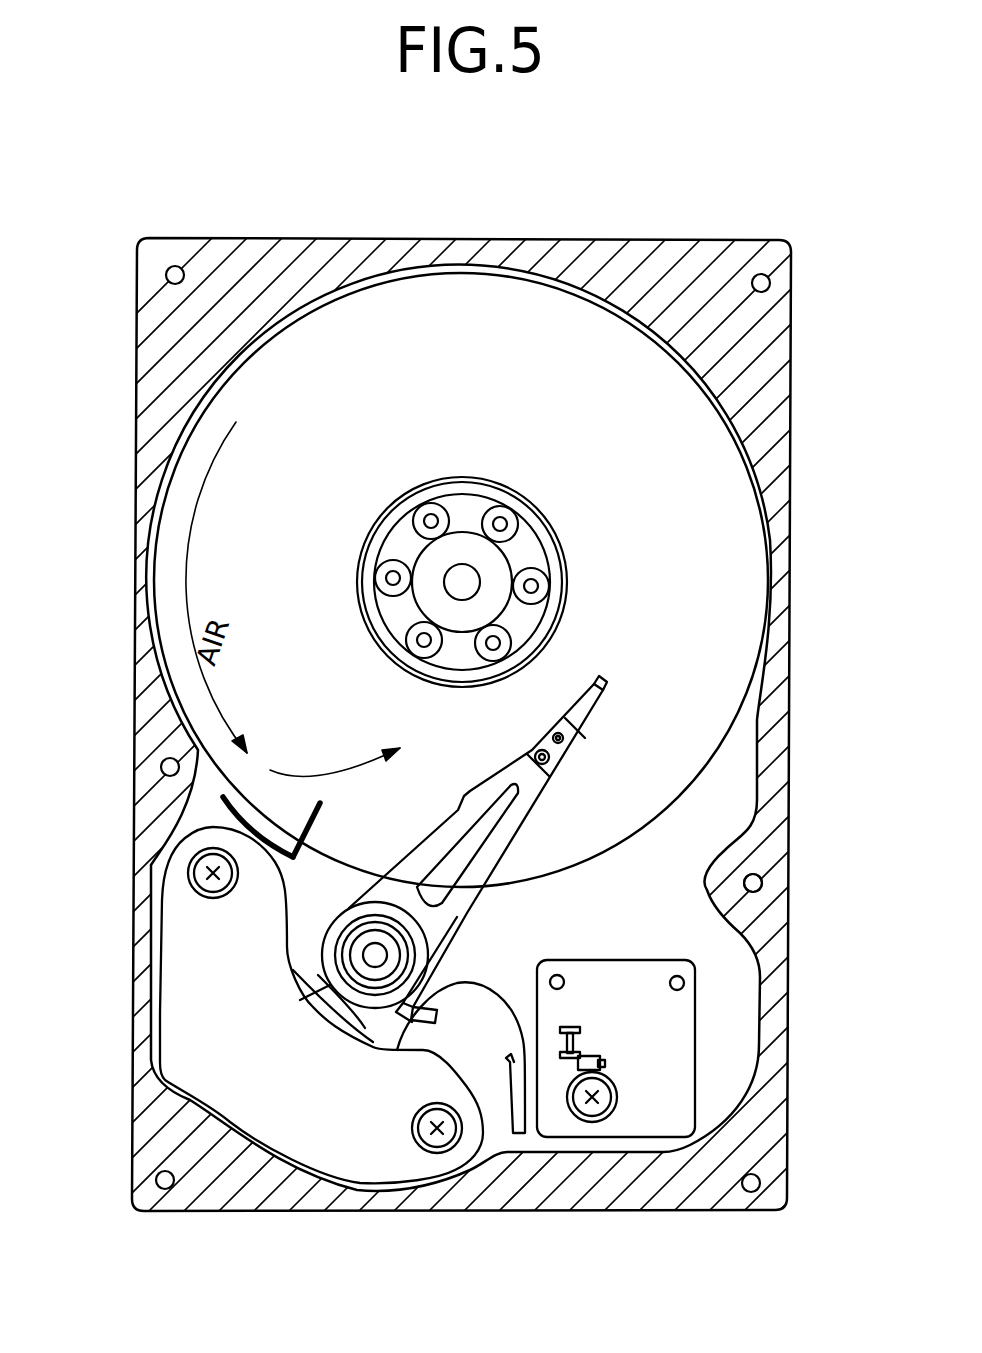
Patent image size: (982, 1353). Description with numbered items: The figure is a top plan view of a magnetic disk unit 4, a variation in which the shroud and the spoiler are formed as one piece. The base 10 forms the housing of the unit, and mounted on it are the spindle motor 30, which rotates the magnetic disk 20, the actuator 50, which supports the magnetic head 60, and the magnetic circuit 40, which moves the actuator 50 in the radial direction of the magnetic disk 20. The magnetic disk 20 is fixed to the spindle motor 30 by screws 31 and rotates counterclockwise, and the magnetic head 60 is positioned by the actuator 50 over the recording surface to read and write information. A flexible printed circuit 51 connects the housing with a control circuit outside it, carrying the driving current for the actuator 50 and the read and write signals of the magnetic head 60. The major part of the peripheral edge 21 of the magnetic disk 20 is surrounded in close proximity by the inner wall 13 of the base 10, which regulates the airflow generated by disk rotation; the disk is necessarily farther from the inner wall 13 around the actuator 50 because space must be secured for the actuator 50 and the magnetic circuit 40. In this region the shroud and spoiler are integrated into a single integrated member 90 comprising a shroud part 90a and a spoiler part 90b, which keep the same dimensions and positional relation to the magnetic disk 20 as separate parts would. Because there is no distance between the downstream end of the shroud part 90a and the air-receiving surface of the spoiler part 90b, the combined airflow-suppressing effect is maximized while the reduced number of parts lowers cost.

The magnetic disk unit 4 is at (826, 178).
The base 10 is at (790, 301).
The inner wall 13 is at (752, 774).
The magnetic disk 20 is at (735, 487).
The peripheral edge 21 is at (152, 641).
The spindle motor 30 is at (505, 560).
The screws 31 is at (505, 628).
The magnetic circuit 40 is at (183, 1045).
The actuator 50 is at (520, 817).
The flexible printed circuit 51 is at (663, 1027).
The magnetic head 60 is at (607, 689).
The integrated member 90 is at (220, 871).
The shroud part 90a is at (222, 810).
The spoiler part 90b is at (318, 825).